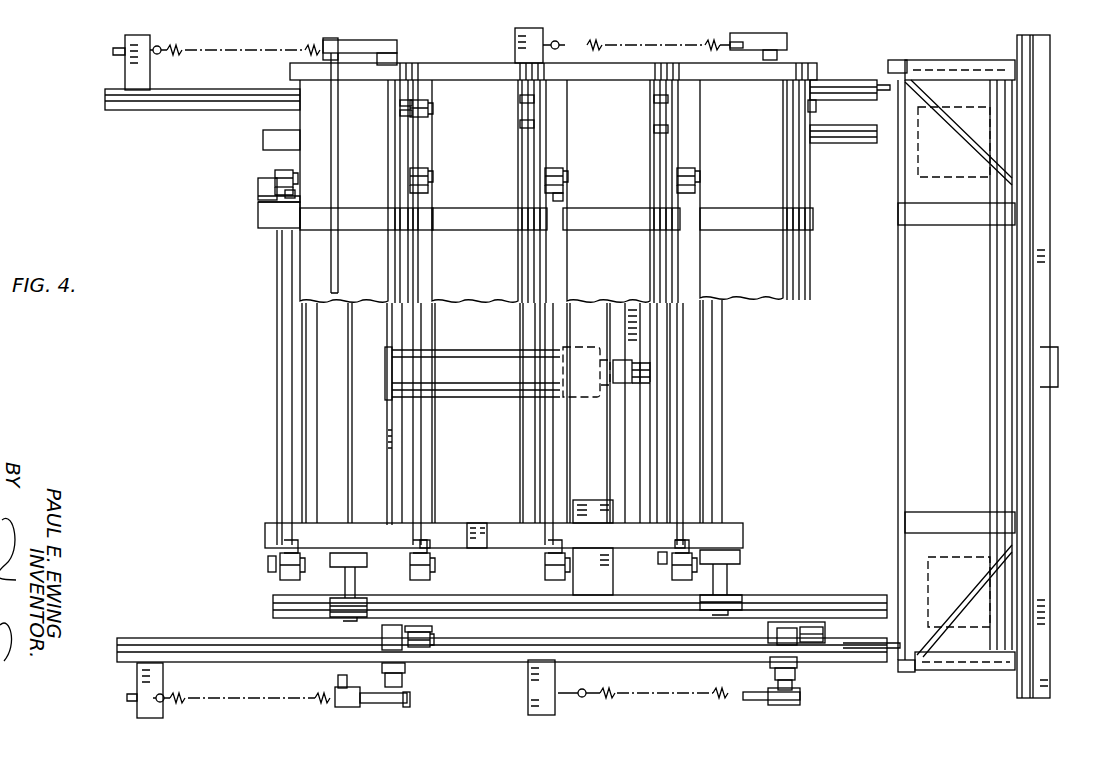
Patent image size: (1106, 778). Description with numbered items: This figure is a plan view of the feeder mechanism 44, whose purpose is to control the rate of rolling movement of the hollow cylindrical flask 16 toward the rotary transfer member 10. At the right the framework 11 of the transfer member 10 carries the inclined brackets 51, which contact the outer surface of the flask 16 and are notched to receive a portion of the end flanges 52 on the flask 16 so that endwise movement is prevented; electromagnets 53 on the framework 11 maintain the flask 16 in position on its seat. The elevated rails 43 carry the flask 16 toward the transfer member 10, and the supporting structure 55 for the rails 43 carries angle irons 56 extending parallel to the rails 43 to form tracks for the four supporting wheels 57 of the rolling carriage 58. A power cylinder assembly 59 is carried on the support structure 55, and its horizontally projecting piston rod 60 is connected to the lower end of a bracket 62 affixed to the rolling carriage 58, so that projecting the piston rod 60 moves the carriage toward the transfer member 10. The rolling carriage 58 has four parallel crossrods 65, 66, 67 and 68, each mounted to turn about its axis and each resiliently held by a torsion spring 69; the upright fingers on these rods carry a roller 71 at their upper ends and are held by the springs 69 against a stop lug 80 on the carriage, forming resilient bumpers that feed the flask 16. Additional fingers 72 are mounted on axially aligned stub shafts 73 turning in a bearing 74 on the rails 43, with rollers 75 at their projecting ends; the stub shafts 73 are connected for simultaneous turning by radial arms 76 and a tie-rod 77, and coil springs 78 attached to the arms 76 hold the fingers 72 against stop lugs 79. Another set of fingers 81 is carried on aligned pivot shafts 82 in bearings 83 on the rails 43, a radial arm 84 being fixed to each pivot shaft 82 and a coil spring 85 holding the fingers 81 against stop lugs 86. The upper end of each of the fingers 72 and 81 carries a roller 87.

The rotary transfer member 10 is at (1050, 283).
The framework 11 is at (1038, 316).
The hollow cylindrical flask 16 is at (905, 372).
The rails 43 is at (158, 92).
The feeder mechanism 44 is at (268, 345).
The inclined brackets 51 is at (345, 590).
The end flanges 52 is at (468, 63).
The electromagnets 53 is at (917, 182).
The supporting structure 55 is at (371, 414).
The angle irons 56 is at (793, 595).
The supporting wheels 57 is at (735, 590).
The rolling carriage 58 is at (258, 215).
The power cylinder assembly 59 is at (452, 350).
The piston rod 60 is at (610, 355).
The bracket 62 is at (650, 372).
The crossrod 65 is at (282, 435).
The crossrod 66 is at (421, 457).
The crossrod 67 is at (548, 472).
The crossrod 68 is at (683, 418).
The torsion spring 69 is at (290, 193).
The roller 71 is at (272, 178).
The fingers 72 is at (430, 627).
The stub shafts 73 is at (397, 58).
The bearing 74 is at (405, 680).
The rollers 75 is at (428, 110).
The radial arms 76 is at (357, 40).
The tie-rod 77 is at (340, 190).
The coil springs 78 is at (262, 45).
The stop lugs 79 is at (382, 637).
The stop lug 80 is at (258, 192).
The fingers 81 is at (815, 85).
The pivot shafts 82 is at (780, 55).
The bearings 83 is at (770, 668).
The radial arm 84 is at (748, 33).
The coil spring 85 is at (618, 42).
The stop lugs 86 is at (777, 635).
The roller 87 is at (818, 108).